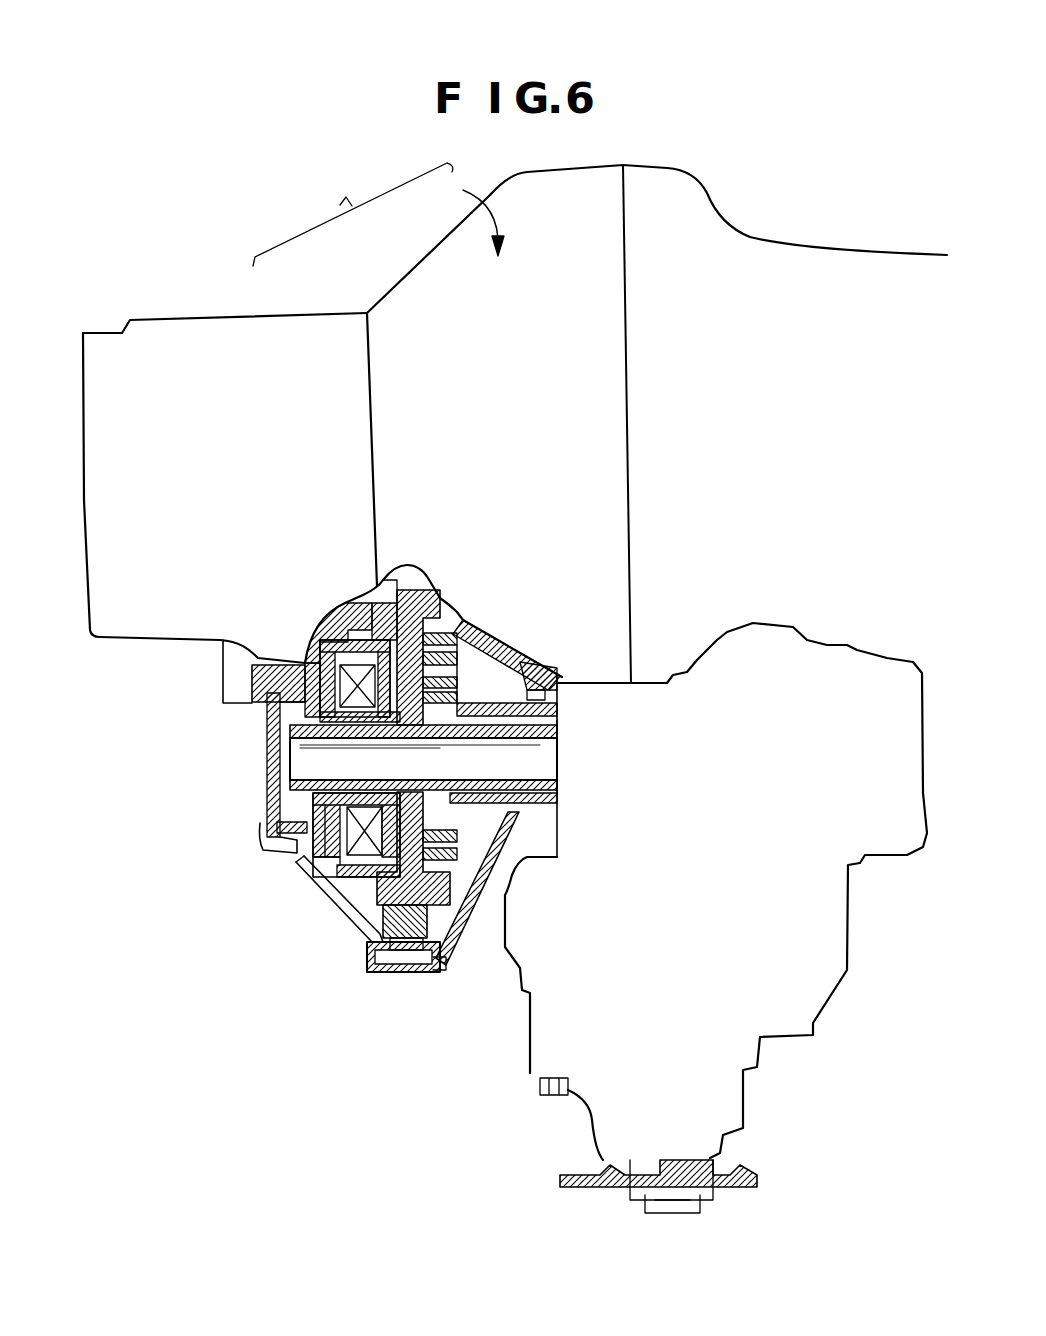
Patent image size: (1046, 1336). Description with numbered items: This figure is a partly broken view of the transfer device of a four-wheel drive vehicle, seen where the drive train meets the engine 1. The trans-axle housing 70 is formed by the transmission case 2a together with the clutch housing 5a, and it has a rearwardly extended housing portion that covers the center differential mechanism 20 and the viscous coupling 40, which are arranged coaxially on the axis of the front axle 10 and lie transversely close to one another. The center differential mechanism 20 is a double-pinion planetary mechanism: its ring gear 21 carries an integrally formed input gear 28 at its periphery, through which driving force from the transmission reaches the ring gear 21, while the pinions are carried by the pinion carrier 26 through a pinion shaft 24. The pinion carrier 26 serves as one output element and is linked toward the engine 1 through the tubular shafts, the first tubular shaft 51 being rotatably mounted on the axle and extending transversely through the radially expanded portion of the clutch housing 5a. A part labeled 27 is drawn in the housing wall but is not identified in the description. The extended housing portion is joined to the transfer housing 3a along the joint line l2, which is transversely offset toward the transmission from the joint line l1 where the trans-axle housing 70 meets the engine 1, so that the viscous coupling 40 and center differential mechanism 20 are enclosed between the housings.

The engine 1 is at (683, 218).
The transmission case 2a is at (277, 340).
The transfer housing 3a is at (787, 1013).
The clutch housing 5a is at (462, 216).
The front axle 10 is at (302, 765).
The center differential mechanism 20 is at (407, 583).
The ring gear 21 is at (413, 907).
The pinion shaft 24 is at (417, 893).
The pinion carrier 26 is at (460, 678).
The housing wall 27 is at (300, 866).
The input gear 28 is at (408, 927).
The viscous coupling 40 is at (385, 883).
The first tubular shaft 51 is at (290, 731).
The trans-axle housing 70 is at (353, 214).
The joint line l1 is at (631, 430).
The joint line l2 is at (557, 783).